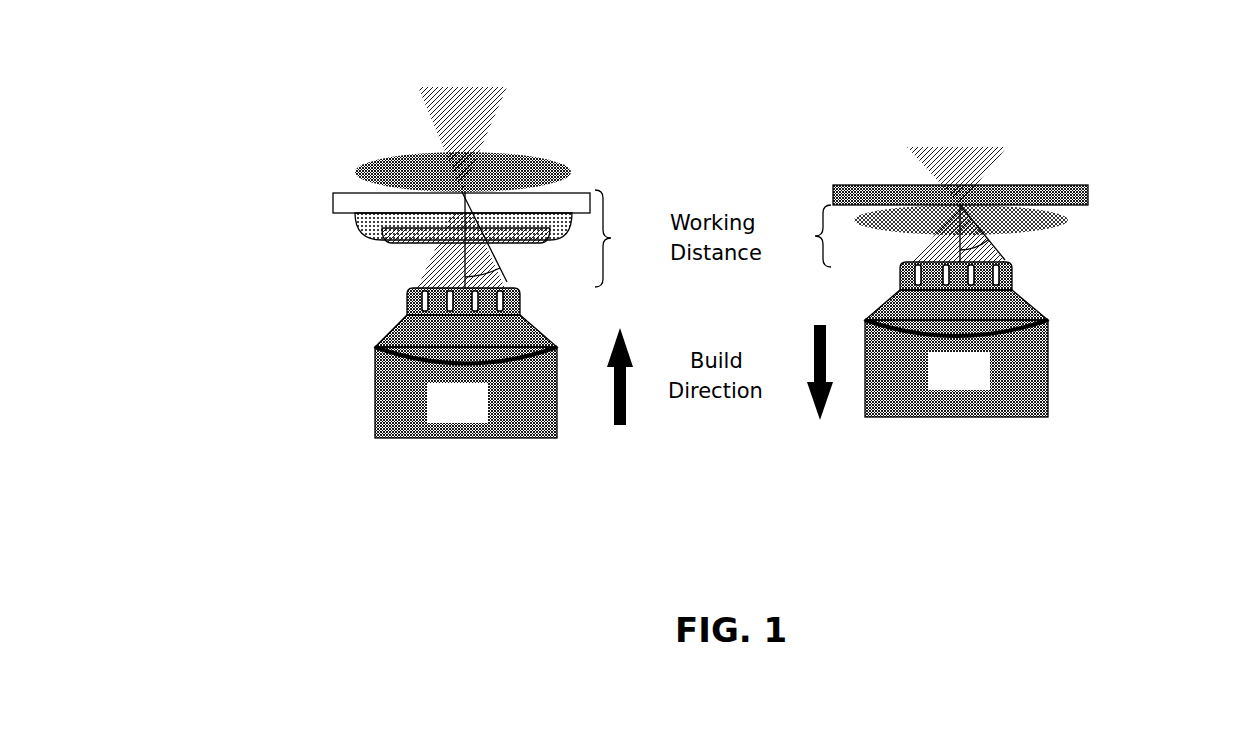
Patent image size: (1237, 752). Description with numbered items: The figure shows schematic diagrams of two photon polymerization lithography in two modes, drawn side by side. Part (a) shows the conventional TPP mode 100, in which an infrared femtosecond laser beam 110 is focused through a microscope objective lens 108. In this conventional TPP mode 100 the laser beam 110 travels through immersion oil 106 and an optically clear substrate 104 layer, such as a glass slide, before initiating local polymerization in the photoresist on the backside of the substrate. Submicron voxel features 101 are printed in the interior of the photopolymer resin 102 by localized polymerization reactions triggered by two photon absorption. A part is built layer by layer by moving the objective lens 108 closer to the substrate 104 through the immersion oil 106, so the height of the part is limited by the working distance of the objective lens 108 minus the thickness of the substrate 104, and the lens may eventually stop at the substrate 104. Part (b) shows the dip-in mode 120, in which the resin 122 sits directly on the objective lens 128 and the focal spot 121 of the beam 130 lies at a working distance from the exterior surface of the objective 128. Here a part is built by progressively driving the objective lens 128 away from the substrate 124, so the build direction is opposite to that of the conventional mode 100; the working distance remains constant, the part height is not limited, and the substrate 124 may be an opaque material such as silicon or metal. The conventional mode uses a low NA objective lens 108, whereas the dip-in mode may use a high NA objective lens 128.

The conventional TPP mode 100 is at (262, 50).
The voxel features 101 is at (458, 188).
The photopolymer resin 102 is at (355, 172).
The optically clear substrate 104 is at (333, 203).
The immersion oil 106 is at (386, 244).
The microscope objective lens 108 is at (477, 415).
The laser beam 110 is at (490, 113).
The dip-in mode 120 is at (878, 44).
The focal spot 121 is at (970, 210).
The resin 122 is at (1070, 222).
The substrate 124 is at (1083, 193).
The objective lens 128 is at (979, 383).
The beam 130 is at (948, 155).